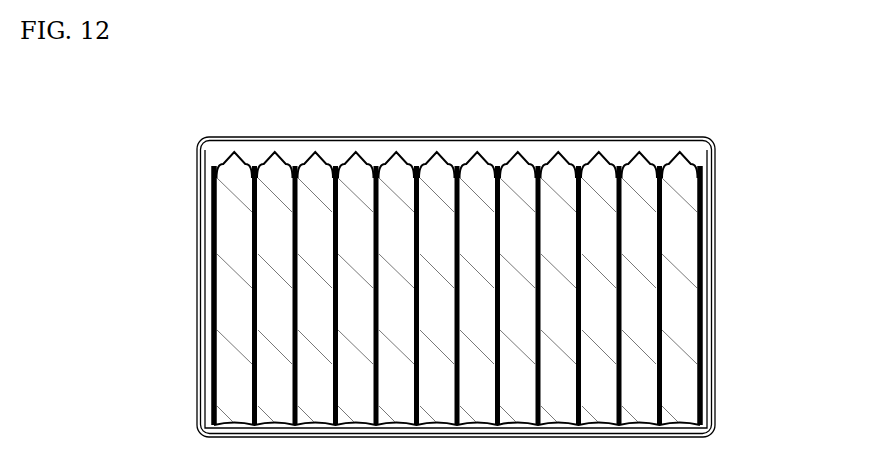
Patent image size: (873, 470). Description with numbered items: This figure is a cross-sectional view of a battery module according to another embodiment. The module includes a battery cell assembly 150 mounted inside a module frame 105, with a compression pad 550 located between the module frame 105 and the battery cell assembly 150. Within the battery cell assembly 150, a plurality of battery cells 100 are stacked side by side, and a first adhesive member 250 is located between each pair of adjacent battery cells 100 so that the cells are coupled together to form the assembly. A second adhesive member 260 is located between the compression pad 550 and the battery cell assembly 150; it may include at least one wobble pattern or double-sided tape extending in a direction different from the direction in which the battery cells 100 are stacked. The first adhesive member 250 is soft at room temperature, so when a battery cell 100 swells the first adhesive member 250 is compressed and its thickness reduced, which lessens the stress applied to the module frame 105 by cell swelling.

The module frame 105 is at (600, 138).
The compression pad 550 is at (712, 186).
The second adhesive member 260 is at (700, 264).
The first adhesive member 250 is at (620, 312).
The battery cell 100 is at (622, 338).
The battery cell assembly 150 is at (662, 378).